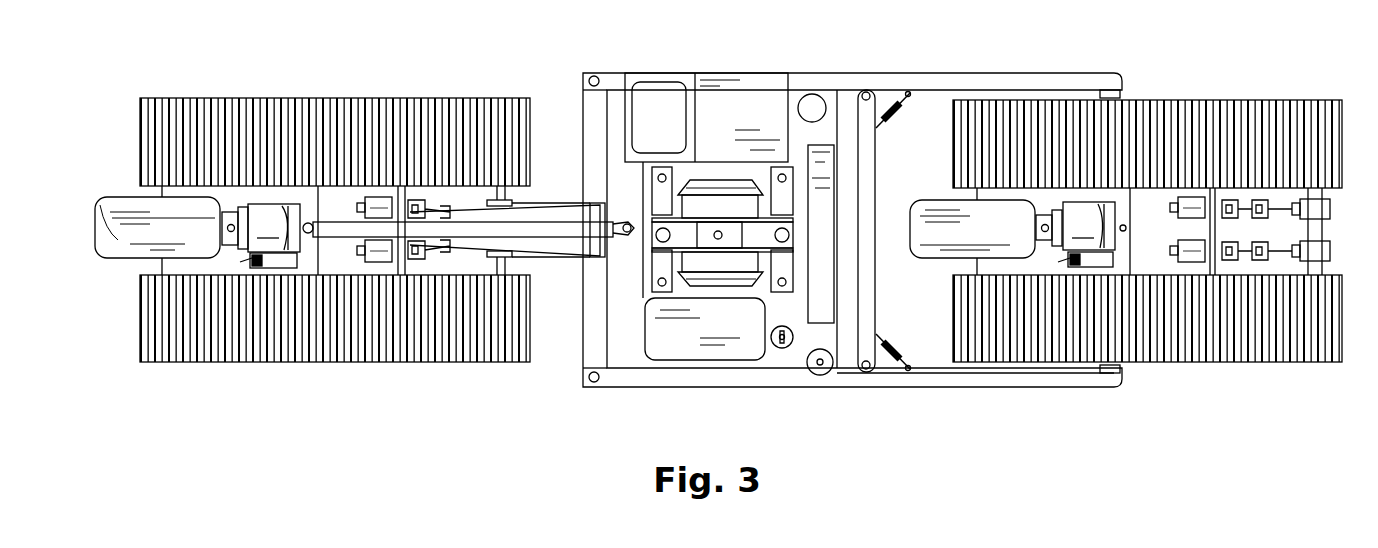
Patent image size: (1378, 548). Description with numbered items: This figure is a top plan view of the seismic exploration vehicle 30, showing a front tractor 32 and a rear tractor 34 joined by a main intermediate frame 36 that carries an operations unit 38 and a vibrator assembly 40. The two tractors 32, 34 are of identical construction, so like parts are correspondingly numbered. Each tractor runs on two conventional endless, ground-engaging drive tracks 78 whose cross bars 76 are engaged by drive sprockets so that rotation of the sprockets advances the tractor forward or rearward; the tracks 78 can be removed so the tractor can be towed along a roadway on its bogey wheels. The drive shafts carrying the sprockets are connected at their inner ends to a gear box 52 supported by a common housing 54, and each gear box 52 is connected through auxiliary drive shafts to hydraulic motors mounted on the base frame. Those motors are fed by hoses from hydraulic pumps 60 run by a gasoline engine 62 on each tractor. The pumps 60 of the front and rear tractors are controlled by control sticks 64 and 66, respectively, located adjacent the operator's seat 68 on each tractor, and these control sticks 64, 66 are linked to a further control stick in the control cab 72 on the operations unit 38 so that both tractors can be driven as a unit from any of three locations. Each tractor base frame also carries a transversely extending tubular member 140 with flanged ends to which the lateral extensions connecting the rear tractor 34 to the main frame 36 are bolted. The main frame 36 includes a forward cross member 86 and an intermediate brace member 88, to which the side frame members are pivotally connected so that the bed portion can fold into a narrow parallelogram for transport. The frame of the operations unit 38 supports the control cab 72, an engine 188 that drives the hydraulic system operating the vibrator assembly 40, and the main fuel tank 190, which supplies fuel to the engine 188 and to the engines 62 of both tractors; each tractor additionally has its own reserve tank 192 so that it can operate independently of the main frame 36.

The seismic exploration vehicle 30 is at (398, 411).
The front tractor 32 is at (170, 378).
The rear tractor 34 is at (1268, 378).
The main intermediate frame 36 is at (880, 376).
The operations unit 38 is at (718, 103).
The vibrator assembly 40 is at (698, 261).
The gear box 52 is at (1330, 208).
The common housing 54 is at (1318, 230).
The hydraulic pumps 60 is at (248, 215).
The gasoline engine 62 is at (102, 200).
The control lever 64 is at (228, 228).
The control lever 66 is at (1042, 228).
The operator's seat 68 is at (274, 228).
The control cab 72 is at (753, 92).
The cross bars 76 is at (278, 352).
The drive tracks 78 is at (277, 98).
The forward cross member 86 is at (592, 325).
The intermediate brace member 88 is at (879, 112).
The tubular member 140 is at (1124, 90).
The engine 188 is at (725, 348).
The main fuel tank 190 is at (820, 305).
The reserve tank 192 is at (292, 268).